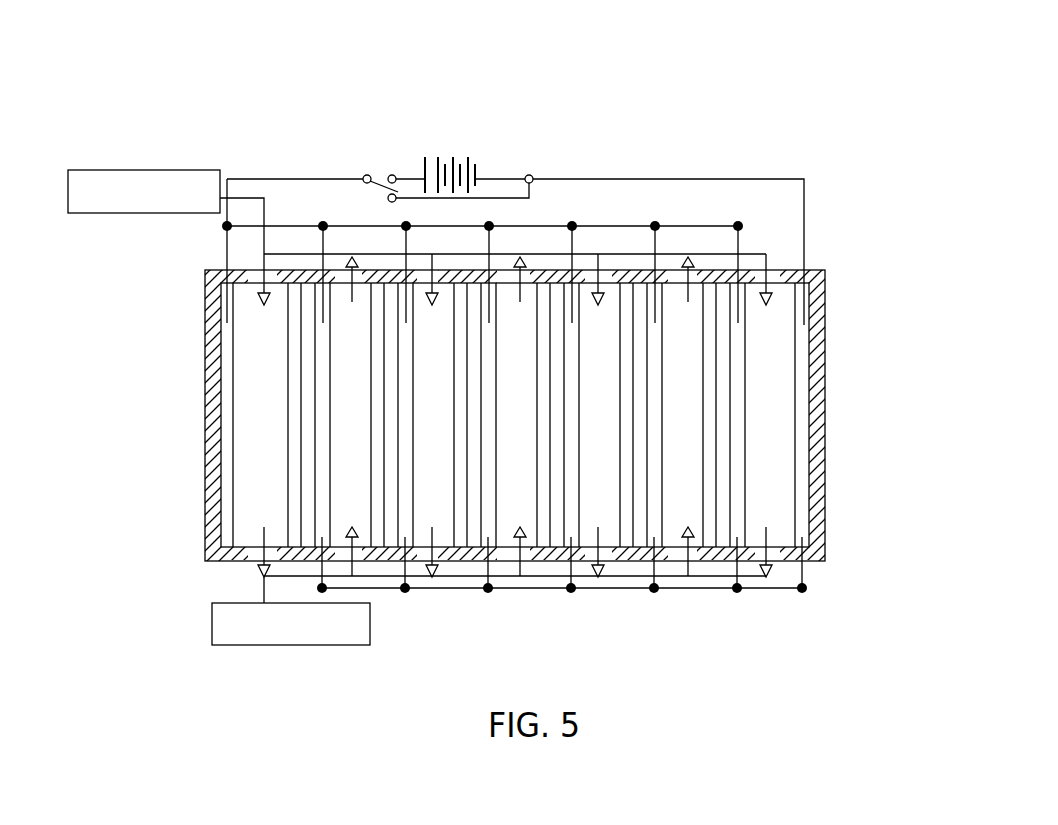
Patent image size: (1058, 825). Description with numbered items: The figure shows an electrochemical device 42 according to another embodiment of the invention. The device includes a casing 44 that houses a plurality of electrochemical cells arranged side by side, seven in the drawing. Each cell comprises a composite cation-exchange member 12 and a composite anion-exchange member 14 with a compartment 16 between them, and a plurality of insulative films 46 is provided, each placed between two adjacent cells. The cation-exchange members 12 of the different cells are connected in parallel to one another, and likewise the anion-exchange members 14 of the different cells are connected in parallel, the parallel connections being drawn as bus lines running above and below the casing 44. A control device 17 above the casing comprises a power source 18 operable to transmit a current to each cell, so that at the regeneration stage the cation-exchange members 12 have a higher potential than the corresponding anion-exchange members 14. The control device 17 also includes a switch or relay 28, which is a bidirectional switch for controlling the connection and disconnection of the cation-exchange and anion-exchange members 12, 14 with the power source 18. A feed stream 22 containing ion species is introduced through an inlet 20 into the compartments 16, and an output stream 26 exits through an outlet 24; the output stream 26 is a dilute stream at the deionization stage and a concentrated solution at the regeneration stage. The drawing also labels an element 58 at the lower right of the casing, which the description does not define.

The electrochemical device 42 is at (780, 68).
The control device 17 is at (445, 143).
The power source 18 is at (477, 170).
The switch or relay 28 is at (382, 177).
The feed stream 22 is at (158, 170).
The inlet 20 is at (257, 272).
The composite cation-exchange member 12 is at (738, 341).
The composite anion-exchange member 14 is at (803, 407).
The compartment 16 is at (778, 425).
The insulative film 46 is at (728, 498).
The casing 44 is at (213, 478).
The outlet 24 is at (255, 562).
The output stream 26 is at (297, 645).
The outlet port 58 is at (776, 560).